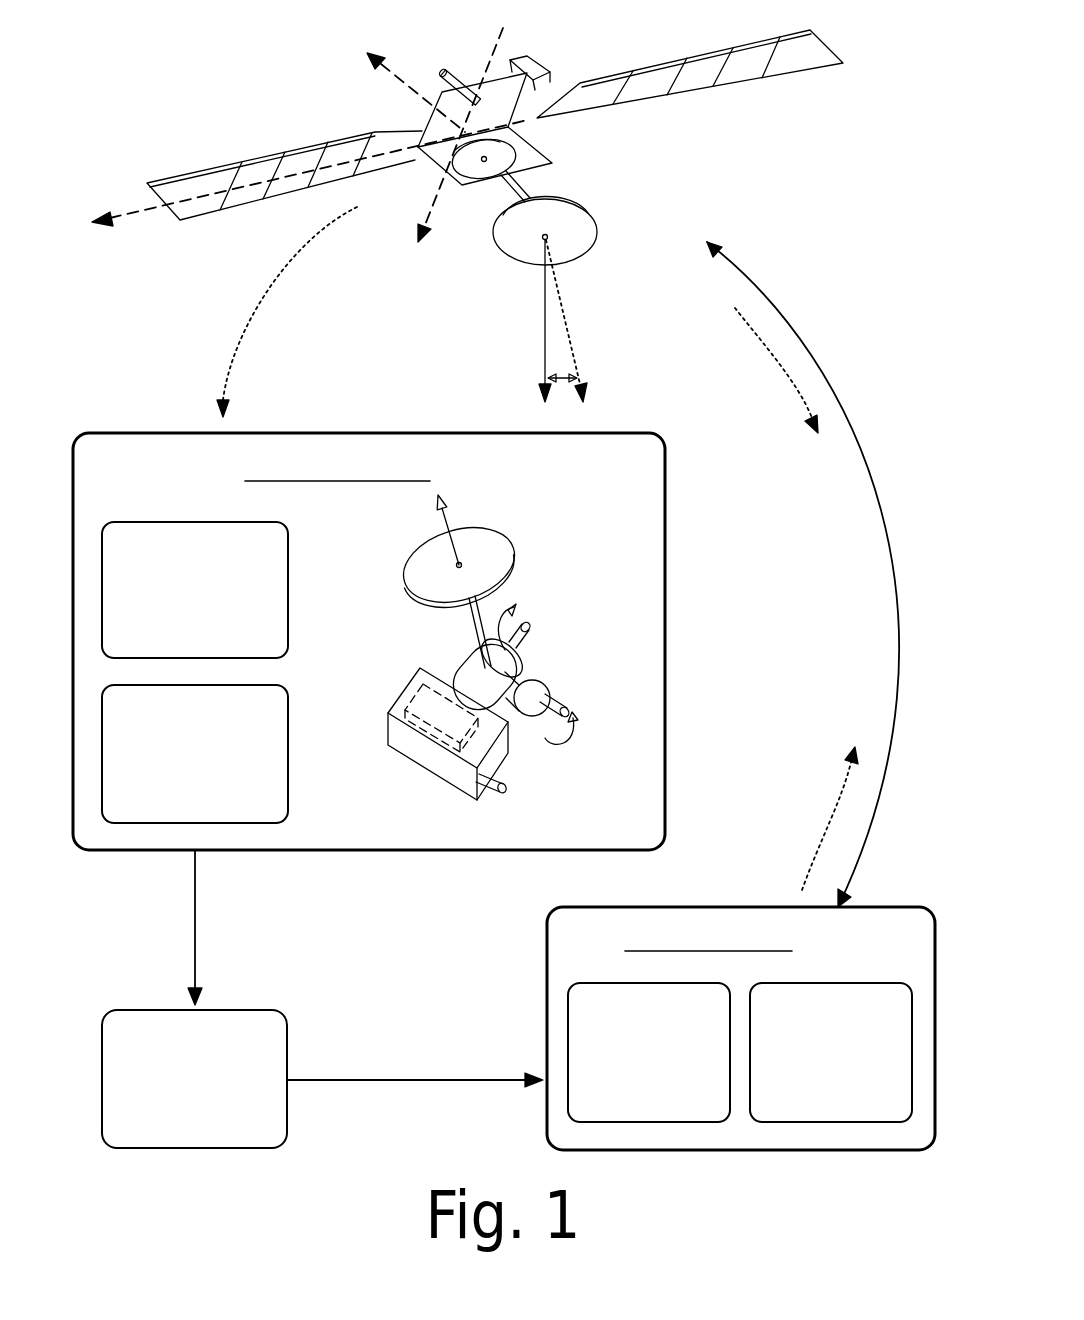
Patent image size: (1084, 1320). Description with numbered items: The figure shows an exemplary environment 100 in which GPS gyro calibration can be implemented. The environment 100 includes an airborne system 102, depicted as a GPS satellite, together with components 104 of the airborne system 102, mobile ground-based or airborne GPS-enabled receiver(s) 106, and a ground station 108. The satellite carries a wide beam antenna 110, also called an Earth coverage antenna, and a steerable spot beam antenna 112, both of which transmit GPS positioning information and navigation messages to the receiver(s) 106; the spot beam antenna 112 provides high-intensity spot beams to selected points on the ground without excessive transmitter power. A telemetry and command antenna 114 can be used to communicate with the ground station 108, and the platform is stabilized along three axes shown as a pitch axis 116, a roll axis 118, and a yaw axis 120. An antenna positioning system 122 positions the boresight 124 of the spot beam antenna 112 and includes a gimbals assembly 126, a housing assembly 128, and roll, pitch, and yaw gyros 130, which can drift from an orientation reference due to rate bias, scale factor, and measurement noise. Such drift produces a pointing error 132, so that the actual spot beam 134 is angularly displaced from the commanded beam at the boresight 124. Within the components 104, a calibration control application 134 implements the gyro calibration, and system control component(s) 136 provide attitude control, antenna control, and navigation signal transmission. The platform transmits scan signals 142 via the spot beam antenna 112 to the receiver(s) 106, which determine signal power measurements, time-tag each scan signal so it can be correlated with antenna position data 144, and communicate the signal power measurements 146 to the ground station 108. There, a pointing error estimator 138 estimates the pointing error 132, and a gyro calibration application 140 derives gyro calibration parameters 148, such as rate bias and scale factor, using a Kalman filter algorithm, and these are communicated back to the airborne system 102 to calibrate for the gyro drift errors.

The environment 100 is at (793, 167).
The airborne system 102 is at (373, 249).
The components 104 is at (446, 425).
The GPS-enabled receiver(s) 106 is at (175, 1121).
The ground station 108 is at (813, 951).
The wide beam antenna 110 is at (483, 182).
The spot beam antenna 112 is at (585, 237).
The telemetry and command antenna 114 is at (460, 72).
The pitch axis 116 is at (75, 267).
The roll axis 118 is at (330, 104).
The yaw axis 120 is at (375, 214).
The antenna positioning system 122 is at (546, 562).
The boresight 124 is at (545, 353).
The gimbals assembly 126 is at (543, 688).
The housing assembly 128 is at (547, 97).
The roll, pitch, and yaw gyros 130 is at (420, 698).
The pointing error 132 is at (570, 367).
The spot beam / calibration control application 134 is at (567, 313).
The system control component(s) 136 is at (175, 650).
The pointing error estimator 138 is at (629, 1109).
The gyro calibration application 140 is at (811, 1109).
The scan signals 142 is at (221, 916).
The antenna position data 144 is at (834, 484).
The signal power measurements 146 is at (343, 1036).
The gyro calibration parameters 148 is at (712, 691).